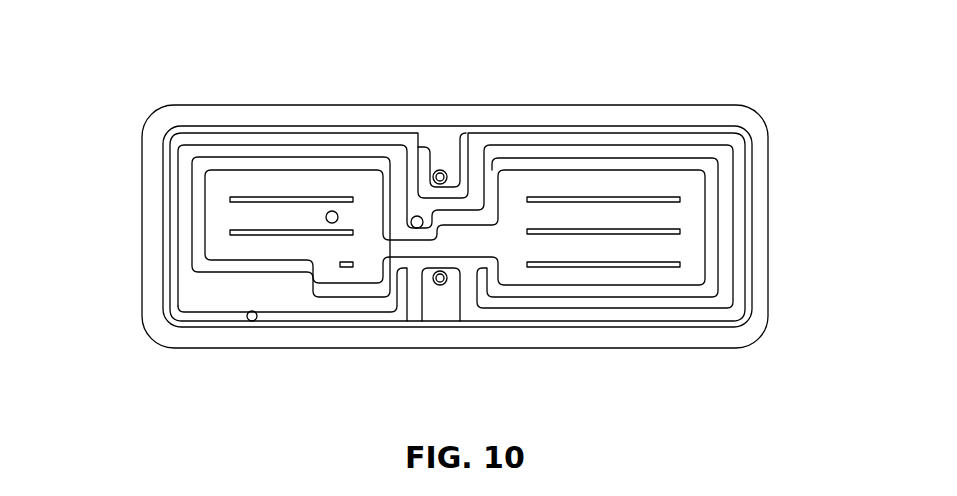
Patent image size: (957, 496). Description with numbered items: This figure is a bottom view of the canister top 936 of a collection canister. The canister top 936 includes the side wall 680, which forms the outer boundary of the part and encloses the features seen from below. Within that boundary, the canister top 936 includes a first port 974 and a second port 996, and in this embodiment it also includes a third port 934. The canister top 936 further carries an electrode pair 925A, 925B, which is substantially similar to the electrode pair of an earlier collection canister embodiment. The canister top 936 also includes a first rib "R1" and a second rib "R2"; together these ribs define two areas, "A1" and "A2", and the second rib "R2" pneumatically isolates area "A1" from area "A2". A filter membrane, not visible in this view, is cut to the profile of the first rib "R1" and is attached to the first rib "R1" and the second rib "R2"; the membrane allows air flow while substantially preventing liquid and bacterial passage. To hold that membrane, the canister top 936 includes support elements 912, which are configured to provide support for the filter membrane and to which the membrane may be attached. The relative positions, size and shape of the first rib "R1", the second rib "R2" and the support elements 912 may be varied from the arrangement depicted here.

The canister top 936 is at (678, 50).
The side wall 680 is at (758, 229).
The support elements 912 is at (578, 230).
The first port 974 is at (329, 207).
The second port 996 is at (413, 213).
The electrode 925A is at (442, 166).
The electrode 925B is at (442, 290).
The third port 934 is at (248, 325).
The area A1 is at (487, 158).
The area A2 is at (232, 214).
The first rib R1 is at (722, 135).
The second rib R2 is at (675, 294).